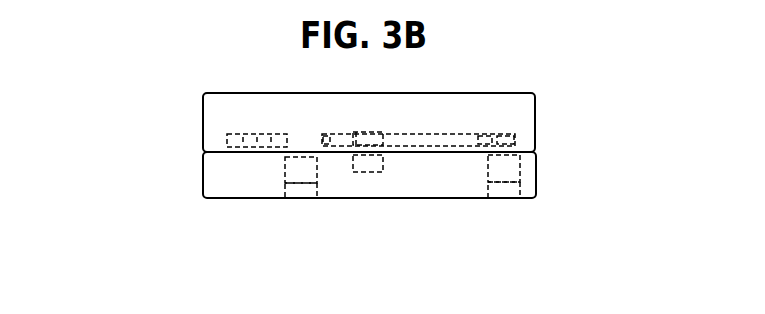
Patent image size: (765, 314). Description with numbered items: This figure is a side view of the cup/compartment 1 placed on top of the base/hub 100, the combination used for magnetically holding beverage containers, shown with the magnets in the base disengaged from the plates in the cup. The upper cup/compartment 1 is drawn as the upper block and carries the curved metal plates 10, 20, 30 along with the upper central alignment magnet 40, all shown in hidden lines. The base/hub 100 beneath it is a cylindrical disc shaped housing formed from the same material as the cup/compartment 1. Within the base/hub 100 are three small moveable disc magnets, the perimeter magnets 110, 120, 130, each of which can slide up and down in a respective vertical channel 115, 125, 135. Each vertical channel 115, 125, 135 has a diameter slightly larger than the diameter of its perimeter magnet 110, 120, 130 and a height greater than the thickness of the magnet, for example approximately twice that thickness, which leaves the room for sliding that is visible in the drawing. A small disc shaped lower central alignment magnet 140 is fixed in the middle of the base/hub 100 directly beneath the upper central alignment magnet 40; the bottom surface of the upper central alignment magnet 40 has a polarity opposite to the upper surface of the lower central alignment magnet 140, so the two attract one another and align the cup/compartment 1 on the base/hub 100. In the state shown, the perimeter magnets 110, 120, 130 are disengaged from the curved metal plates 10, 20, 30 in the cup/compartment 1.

The cup/compartment 1 is at (535, 113).
The curved metal plate 10 is at (255, 133).
The curved metal plate 20 is at (465, 133).
The curved metal plate 30 is at (418, 140).
The upper central alignment magnet 40 is at (367, 132).
The base/hub 100 is at (537, 172).
The perimeter magnet 110 is at (295, 198).
The vertical channel 115 is at (285, 170).
The perimeter magnet 120 is at (505, 188).
The vertical channel 125 is at (520, 168).
The perimeter magnet 130 is at (301, 190).
The vertical channel 135 is at (301, 170).
The lower central alignment magnet 140 is at (368, 172).